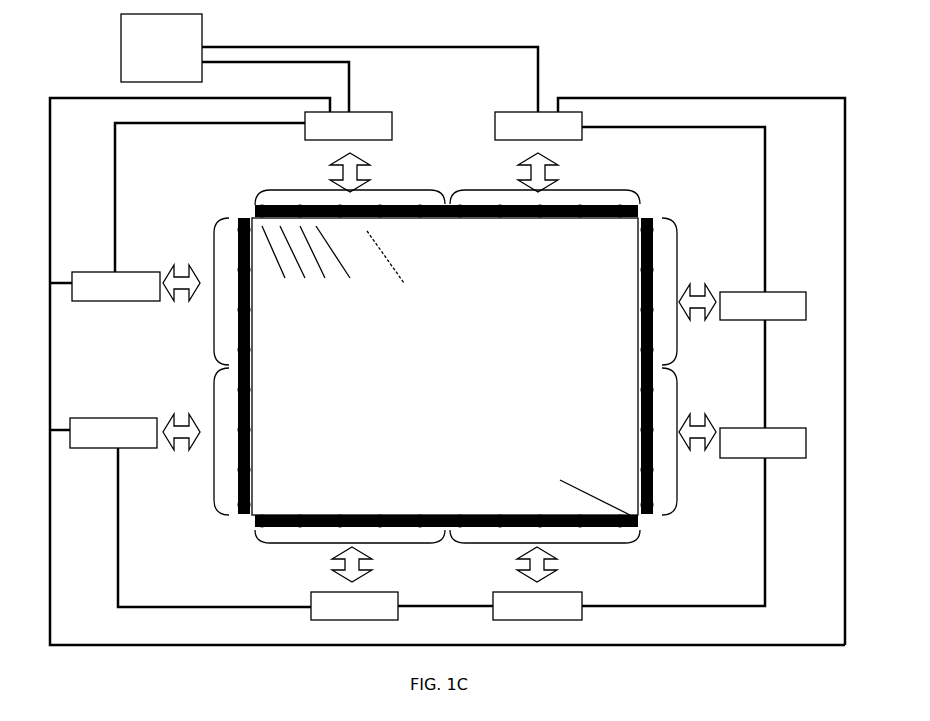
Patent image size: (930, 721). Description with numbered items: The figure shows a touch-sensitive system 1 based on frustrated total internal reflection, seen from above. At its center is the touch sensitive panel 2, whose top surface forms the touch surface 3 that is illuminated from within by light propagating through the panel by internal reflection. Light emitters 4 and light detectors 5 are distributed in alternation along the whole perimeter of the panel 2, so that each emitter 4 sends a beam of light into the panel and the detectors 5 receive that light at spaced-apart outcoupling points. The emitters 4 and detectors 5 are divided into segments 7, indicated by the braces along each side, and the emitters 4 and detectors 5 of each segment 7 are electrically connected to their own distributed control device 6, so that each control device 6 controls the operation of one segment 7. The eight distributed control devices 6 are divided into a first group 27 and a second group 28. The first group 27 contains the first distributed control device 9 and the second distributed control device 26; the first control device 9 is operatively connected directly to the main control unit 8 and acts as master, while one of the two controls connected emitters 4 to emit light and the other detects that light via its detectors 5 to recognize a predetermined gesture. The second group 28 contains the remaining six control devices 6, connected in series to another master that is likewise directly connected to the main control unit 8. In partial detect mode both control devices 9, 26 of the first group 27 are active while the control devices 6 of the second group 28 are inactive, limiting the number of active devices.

The touch-sensitive system 1 is at (553, 73).
The touch sensitive panel 2 is at (588, 462).
The touch surface 3 is at (582, 295).
The light emitter 4 is at (299, 262).
The light detector 5 is at (342, 262).
The distributed control device 6 is at (543, 136).
The segment 7 is at (278, 185).
The main control unit 8 is at (166, 53).
The first distributed control device 9 is at (353, 136).
The second distributed control device 26 is at (90, 285).
The first group 27 is at (70, 87).
The second group 28 is at (773, 97).